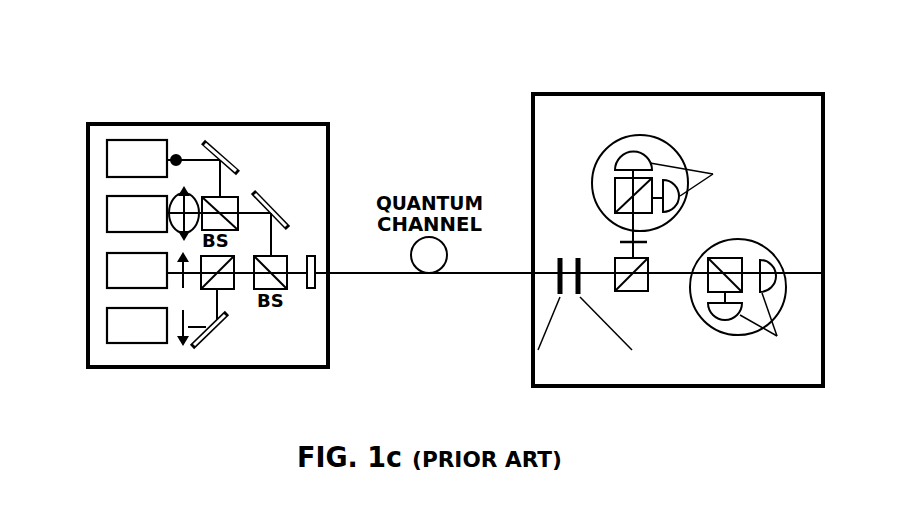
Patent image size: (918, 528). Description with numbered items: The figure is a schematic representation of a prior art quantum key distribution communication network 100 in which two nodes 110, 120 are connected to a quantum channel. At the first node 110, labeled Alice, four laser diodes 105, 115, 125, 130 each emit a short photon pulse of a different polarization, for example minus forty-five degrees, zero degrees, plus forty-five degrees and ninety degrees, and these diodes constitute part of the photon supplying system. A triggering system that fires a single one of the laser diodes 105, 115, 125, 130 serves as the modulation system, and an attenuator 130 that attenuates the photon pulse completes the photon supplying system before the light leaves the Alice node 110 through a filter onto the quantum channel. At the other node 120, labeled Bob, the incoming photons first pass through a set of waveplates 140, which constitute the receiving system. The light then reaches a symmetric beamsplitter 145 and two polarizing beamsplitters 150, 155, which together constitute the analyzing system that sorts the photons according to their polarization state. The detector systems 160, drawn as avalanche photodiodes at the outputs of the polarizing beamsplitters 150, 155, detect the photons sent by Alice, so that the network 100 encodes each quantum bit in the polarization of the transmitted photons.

The communication network 100 is at (455, 198).
The laser diode 105 is at (107, 153).
The node 110 is at (255, 124).
The laser diode 115 is at (107, 210).
The node 120 is at (635, 94).
The laser diode 125 is at (107, 265).
The laser diode / attenuator 130 is at (107, 322).
The waveplates 140 is at (571, 254).
The symmetric beamsplitter 145 is at (633, 297).
The polarizing beamsplitter 150 is at (596, 164).
The polarizing beamsplitter 155 is at (727, 258).
The detector systems 160 is at (677, 153).